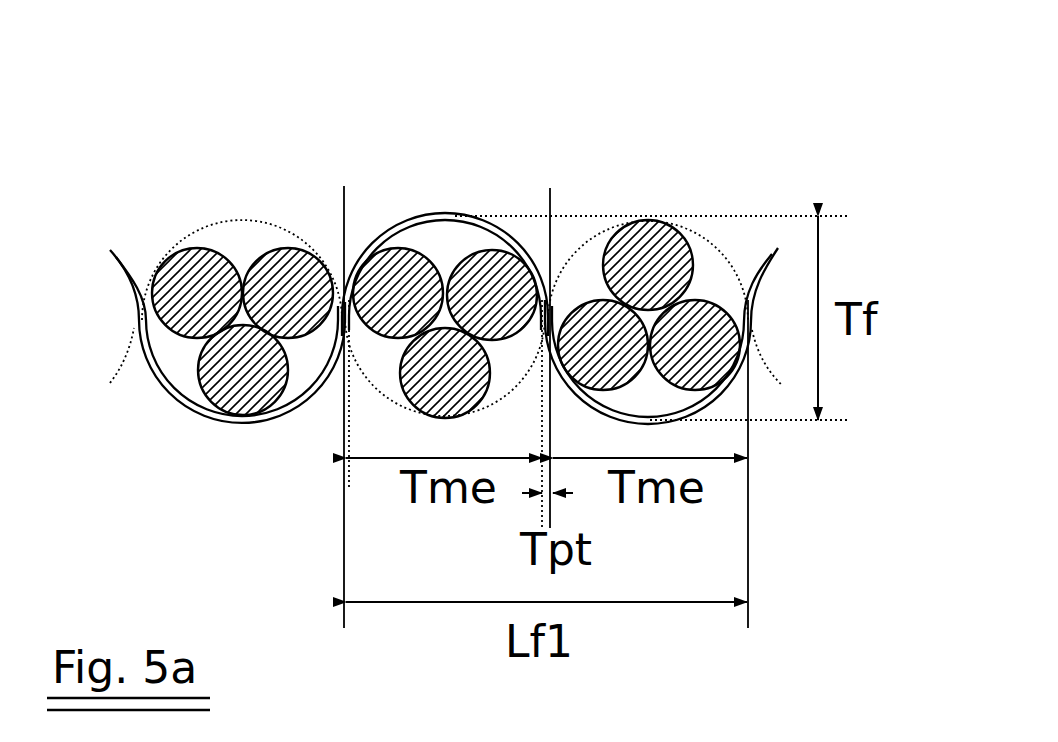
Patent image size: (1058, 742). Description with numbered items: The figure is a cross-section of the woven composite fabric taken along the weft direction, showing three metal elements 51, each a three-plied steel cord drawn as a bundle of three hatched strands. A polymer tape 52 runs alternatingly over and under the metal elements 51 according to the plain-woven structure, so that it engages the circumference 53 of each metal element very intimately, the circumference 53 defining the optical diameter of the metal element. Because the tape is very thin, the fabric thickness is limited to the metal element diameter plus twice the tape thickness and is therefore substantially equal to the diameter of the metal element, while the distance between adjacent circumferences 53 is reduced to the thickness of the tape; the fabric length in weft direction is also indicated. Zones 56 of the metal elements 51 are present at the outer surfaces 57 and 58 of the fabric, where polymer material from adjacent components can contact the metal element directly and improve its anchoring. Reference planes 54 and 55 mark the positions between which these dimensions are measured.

The metal element 51 is at (628, 262).
The polymer tape 52 is at (771, 256).
The circumference 53 is at (700, 238).
The first reference plane 54 is at (344, 186).
The second reference plane 55 is at (550, 188).
The zone 56 is at (232, 205).
The outer surface 57 is at (303, 620).
The outer surface 58 is at (466, 140).